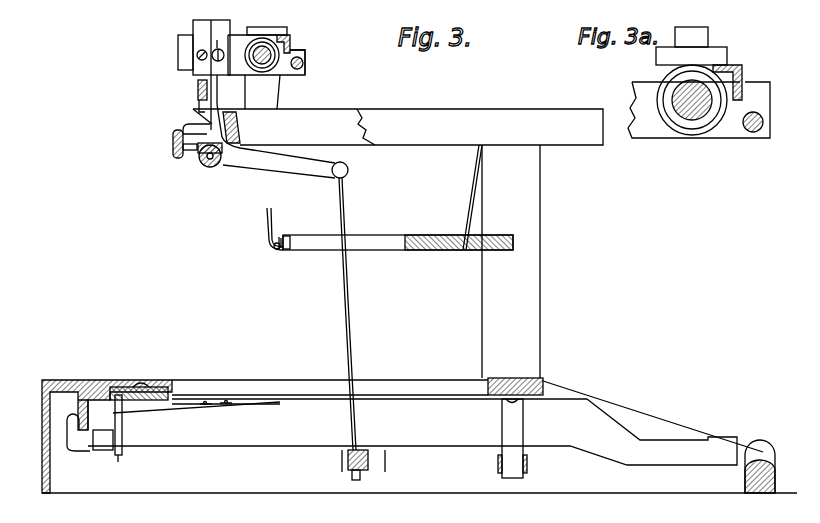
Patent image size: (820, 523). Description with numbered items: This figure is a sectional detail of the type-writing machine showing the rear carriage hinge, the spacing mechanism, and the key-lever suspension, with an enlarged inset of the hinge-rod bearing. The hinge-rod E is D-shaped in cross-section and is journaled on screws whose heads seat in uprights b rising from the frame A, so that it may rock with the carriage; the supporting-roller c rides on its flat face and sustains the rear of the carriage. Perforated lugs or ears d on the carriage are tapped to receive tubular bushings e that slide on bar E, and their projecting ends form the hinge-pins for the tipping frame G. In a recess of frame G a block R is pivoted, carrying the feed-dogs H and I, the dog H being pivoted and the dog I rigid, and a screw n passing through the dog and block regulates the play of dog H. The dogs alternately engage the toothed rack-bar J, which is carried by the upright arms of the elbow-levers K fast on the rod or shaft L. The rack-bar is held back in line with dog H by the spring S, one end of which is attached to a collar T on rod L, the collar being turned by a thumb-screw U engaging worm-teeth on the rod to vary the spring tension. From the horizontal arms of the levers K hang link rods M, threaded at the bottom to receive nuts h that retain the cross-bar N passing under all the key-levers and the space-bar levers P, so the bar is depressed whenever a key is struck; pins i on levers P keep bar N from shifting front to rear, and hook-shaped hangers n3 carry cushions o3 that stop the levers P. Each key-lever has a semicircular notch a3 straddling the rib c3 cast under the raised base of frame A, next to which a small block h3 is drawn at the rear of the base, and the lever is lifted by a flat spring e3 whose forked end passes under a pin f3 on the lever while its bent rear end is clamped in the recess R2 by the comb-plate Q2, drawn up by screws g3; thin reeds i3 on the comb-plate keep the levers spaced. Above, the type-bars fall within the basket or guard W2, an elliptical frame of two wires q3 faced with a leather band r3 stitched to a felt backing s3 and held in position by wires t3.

In FIG. 3, the frame A is at (410, 105).
In FIG. 3, the feed-dog H is at (196, 28).
In FIG. 3, the block R is at (178, 48).
In FIG. 3, the screw n is at (197, 57).
In FIG. 3, the feed-dog I is at (220, 46).
In FIG. 3, the hinge-rod E is at (262, 46).
In FIG. 3A, the hinge-rod E is at (676, 88).
In FIG. 3, the tubular bushing e is at (272, 30).
In FIG. 3A, the tubular bushing e is at (728, 56).
In FIG. 3, the perforated lug d is at (292, 44).
In FIG. 3A, the perforated lug d is at (744, 78).
In FIG. 3, the tipping frame G is at (306, 52).
In FIG. 3A, the tipping frame G is at (771, 96).
In FIG. 3, the rod V is at (304, 64).
In FIG. 3A, the rod V is at (763, 125).
In FIG. 3, the upright b is at (272, 88).
In FIG. 3, the rack-bar J is at (198, 88).
In FIG. 3, the elbow-lever K is at (279, 134).
In FIG. 3, the spring S is at (185, 124).
In FIG. 3, the thumb-screw U is at (172, 150).
In FIG. 3, the collar T is at (192, 160).
In FIG. 3, the rod or shaft L is at (210, 168).
In FIG. 3, the space-bar lever P is at (201, 167).
In FIG. 3, the wire q3 is at (460, 252).
In FIG. 3, the basket or guard W2 is at (430, 216).
In FIG. 3, the leather band r3 is at (292, 238).
In FIG. 3, the backing s3 is at (282, 238).
In FIG. 3, the wire t3 is at (260, 229).
In FIG. 3, the link or wire rod M is at (355, 314).
In FIG. 3, the comb-plate Q2 is at (128, 388).
In FIG. 3, the bolt or screw g3 is at (143, 385).
In FIG. 3, the recess R2 is at (160, 410).
In FIG. 3, the flat spring e3 is at (178, 404).
In FIG. 3, the pin or screw f3 is at (206, 402).
In FIG. 3, the rib c3 is at (78, 406).
In FIG. 3, the semicircular notch a3 is at (78, 432).
In FIG. 3, the block h3 is at (100, 447).
In FIG. 3, the flat pin or reed i3 is at (118, 458).
In FIG. 3, the cross-bar N is at (365, 450).
In FIG. 3, the pin i is at (340, 464).
In FIG. 3, the nut h is at (352, 474).
In FIG. 3, the hook-shaped hanger n3 is at (511, 438).
In FIG. 3, the cushion o3 is at (528, 466).
In FIG. 3A, the supporting-roller c is at (709, 32).